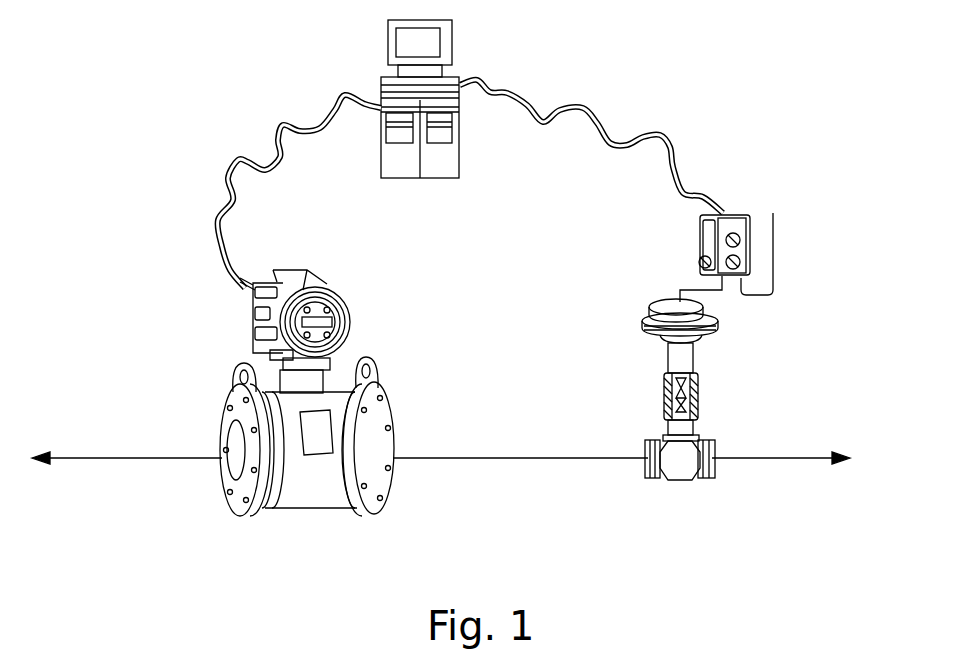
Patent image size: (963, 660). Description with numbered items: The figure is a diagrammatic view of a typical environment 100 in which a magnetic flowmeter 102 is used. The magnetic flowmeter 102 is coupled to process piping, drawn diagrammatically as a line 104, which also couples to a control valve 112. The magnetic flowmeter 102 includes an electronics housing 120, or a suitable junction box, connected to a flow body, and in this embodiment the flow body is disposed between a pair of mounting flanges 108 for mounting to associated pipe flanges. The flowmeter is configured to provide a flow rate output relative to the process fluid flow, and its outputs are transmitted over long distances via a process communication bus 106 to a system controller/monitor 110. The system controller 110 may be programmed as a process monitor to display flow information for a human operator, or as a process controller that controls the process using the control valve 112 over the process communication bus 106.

The environment 100 is at (684, 86).
The magnetic flowmeter 102 is at (408, 320).
The process piping 104 is at (463, 458).
The process communication bus 106 is at (275, 125).
The mounting flanges 108 is at (223, 487).
The system controller/monitor 110 is at (452, 35).
The control valve 112 is at (696, 352).
The electronics housing 120 is at (330, 290).